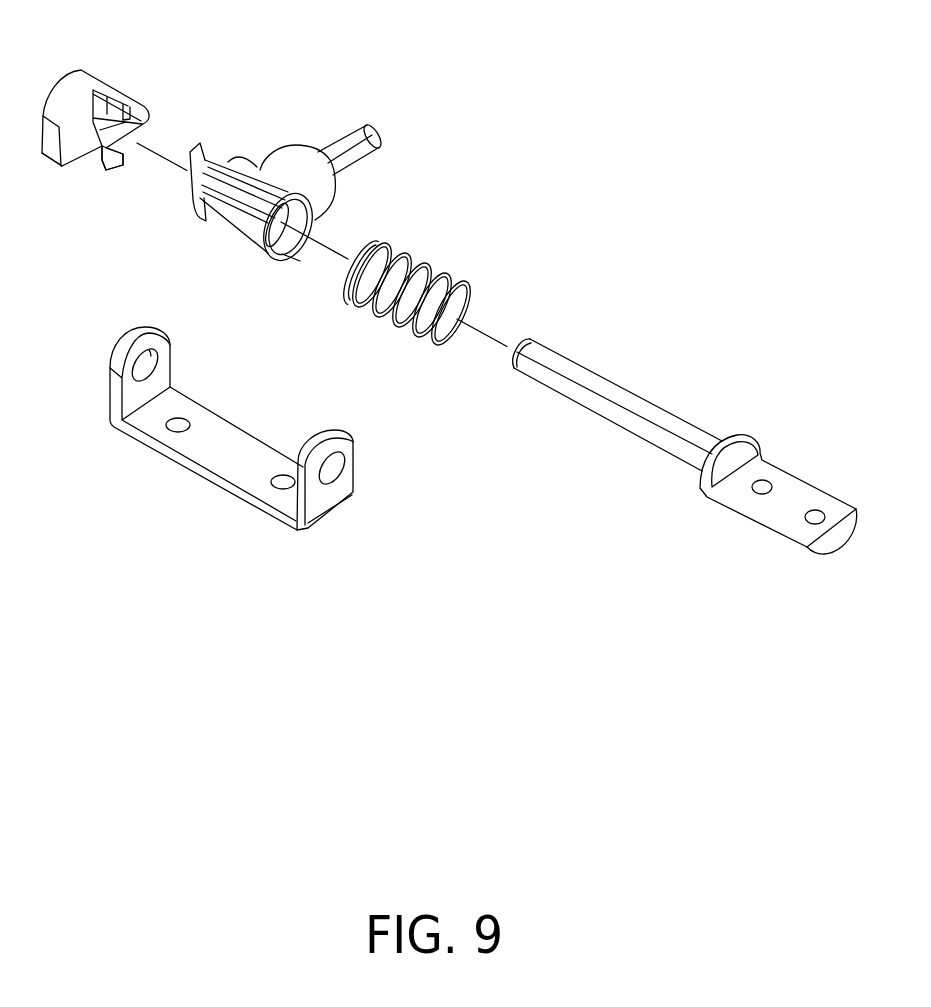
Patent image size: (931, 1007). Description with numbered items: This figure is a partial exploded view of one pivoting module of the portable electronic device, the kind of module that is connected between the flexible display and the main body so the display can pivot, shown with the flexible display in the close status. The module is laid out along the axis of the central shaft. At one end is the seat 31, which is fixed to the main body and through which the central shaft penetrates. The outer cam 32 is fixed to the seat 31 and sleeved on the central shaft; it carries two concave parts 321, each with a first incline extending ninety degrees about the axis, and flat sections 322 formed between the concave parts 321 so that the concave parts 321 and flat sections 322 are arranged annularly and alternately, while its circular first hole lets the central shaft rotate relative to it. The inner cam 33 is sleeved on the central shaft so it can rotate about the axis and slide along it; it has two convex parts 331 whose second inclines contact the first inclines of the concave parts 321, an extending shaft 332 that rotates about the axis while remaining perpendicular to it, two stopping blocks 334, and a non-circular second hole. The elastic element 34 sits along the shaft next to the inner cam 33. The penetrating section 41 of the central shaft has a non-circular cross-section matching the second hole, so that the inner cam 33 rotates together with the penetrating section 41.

The seat 31 is at (323, 497).
The outer cam 32 is at (77, 137).
The concave part 321 is at (110, 106).
The flat section 322 is at (111, 158).
The inner cam 33 is at (283, 199).
The convex part 331 is at (205, 157).
The extending shaft 332 is at (337, 143).
The stopping block 334 is at (296, 254).
The elastic element 34 is at (439, 274).
The penetrating section 41 is at (643, 410).